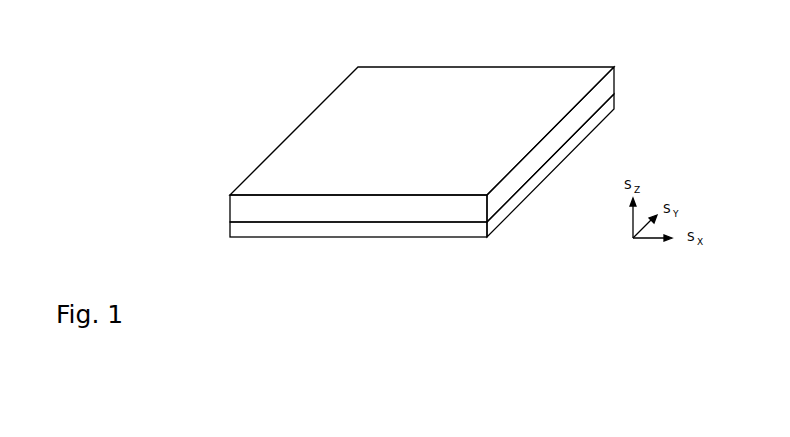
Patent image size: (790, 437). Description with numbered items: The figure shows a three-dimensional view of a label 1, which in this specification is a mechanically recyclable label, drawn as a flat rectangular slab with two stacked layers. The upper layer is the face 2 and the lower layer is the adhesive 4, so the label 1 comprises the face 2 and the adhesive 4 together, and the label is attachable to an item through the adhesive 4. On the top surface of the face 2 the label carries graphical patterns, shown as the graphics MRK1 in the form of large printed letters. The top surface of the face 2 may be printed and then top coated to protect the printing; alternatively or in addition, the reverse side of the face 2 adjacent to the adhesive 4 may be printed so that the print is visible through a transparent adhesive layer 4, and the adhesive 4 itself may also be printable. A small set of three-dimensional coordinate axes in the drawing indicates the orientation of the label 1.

The label 1 is at (397, 135).
The face 2 is at (230, 206).
The adhesive 4 is at (228, 231).
The graphics MRK1 is at (350, 125).